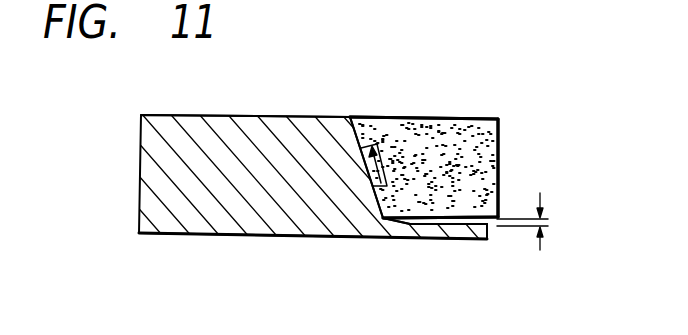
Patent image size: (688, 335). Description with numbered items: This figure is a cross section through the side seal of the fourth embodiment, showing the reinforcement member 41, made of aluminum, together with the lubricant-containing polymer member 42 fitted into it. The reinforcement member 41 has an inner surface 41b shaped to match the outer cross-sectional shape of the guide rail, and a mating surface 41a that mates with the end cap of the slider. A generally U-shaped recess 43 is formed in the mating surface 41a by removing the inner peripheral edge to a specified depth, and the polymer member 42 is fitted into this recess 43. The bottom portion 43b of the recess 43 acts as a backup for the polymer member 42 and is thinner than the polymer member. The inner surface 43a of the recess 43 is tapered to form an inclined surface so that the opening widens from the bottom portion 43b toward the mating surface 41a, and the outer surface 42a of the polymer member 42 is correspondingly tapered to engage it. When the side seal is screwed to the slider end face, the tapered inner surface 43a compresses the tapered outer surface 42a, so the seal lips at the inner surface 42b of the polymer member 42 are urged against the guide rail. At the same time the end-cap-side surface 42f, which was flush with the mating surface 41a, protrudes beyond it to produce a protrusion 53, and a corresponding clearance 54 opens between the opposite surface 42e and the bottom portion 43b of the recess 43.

The reinforcement member 41 is at (302, 232).
The mating surface 41a is at (178, 112).
The inner surface 41b is at (488, 238).
The lubricant-containing polymer member 42 is at (417, 122).
The outer surface 42a is at (362, 160).
The inner surface 42b is at (502, 132).
The surface 42e is at (413, 228).
The surface 42f is at (472, 118).
The recess 43 is at (442, 216).
The inner surface 43a is at (367, 122).
The bottom portion 43b is at (463, 235).
The protrusion 53 is at (345, 122).
The clearance 54 is at (538, 221).